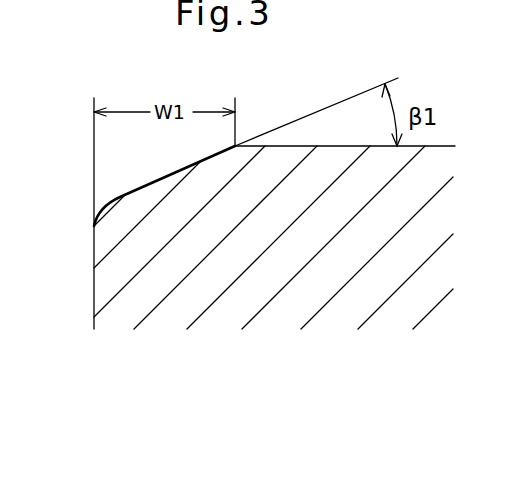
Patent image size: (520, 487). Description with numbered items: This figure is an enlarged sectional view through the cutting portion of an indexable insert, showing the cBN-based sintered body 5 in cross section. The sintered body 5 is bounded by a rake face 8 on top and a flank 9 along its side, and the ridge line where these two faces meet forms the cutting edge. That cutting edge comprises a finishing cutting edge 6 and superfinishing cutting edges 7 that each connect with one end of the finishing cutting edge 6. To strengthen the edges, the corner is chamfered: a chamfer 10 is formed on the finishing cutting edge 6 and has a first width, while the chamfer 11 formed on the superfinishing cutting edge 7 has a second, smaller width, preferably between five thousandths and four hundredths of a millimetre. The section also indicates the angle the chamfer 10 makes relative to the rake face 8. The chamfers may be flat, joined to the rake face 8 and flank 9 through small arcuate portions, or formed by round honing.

The cBN-based sintered body 5 is at (402, 303).
The finishing cutting edge 6 is at (103, 173).
The superfinishing cutting edge 7 is at (519, 205).
The rake face 8 is at (440, 146).
The flank 9 is at (94, 277).
The chamfer 10 is at (183, 171).
The chamfer 11 is at (507, 253).